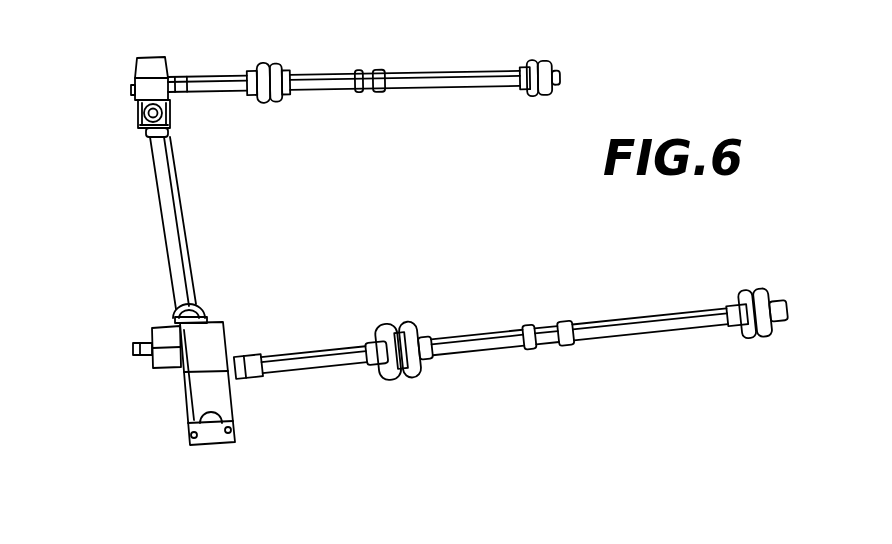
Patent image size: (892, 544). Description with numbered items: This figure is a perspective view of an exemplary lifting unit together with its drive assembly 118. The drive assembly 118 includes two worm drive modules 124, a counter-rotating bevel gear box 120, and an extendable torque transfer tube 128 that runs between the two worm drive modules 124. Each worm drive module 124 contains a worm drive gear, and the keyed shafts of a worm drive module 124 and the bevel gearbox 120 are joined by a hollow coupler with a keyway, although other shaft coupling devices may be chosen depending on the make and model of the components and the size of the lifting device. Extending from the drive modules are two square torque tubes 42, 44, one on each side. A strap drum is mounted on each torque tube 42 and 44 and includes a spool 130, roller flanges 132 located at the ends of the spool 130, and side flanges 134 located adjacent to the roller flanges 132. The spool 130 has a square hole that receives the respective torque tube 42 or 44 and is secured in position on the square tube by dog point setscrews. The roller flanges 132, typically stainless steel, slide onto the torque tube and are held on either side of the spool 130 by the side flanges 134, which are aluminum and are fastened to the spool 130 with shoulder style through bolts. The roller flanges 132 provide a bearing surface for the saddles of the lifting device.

The torque tube 42 is at (508, 347).
The torque tube 44 is at (220, 82).
The drive assembly 118 is at (116, 142).
The counter-rotating bevel gear box 120 is at (160, 363).
The worm drive module 124 is at (138, 62).
The extendable torque transfer tube 128 is at (168, 238).
The spool 130 is at (407, 370).
The roller flange 132 is at (369, 345).
The side flange 134 is at (418, 366).